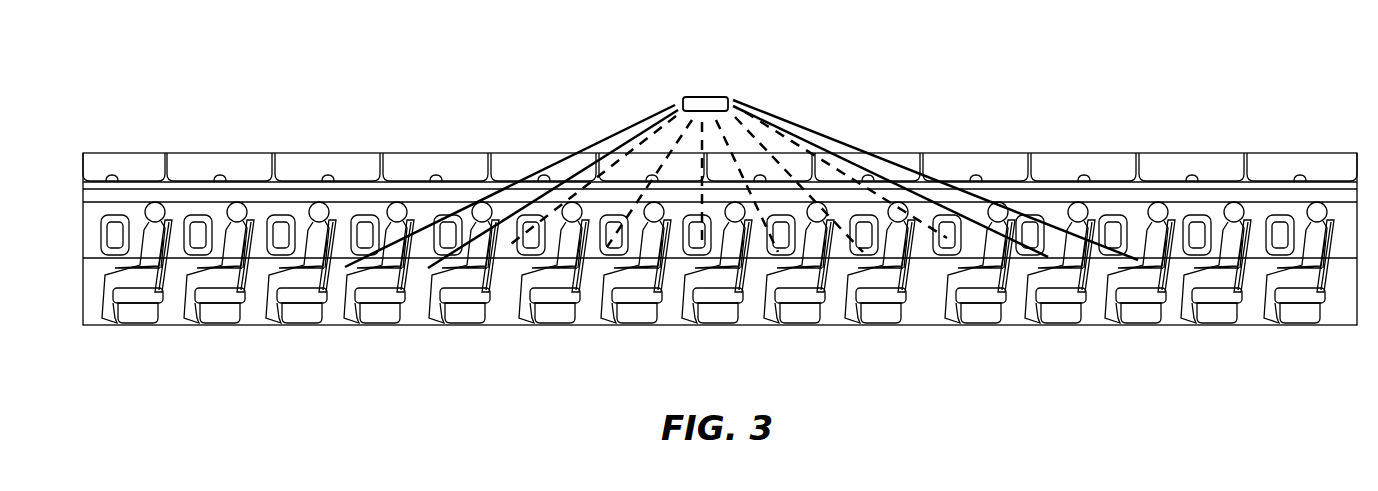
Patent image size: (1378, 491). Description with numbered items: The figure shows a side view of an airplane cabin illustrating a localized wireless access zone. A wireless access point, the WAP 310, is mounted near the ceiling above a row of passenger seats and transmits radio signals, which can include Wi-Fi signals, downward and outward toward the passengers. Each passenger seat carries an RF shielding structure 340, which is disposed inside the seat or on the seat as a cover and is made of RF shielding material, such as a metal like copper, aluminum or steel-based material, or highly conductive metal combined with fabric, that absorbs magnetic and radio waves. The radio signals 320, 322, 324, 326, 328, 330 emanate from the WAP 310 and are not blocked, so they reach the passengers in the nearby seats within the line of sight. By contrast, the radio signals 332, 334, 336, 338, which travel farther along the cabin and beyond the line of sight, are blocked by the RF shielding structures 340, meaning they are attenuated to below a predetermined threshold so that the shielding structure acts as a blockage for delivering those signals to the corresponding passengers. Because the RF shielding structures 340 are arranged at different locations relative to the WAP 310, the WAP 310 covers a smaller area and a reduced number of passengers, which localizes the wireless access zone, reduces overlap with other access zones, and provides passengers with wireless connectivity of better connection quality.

The WAP 310 is at (712, 95).
The radio signal 320 is at (593, 166).
The radio signal 322 is at (663, 153).
The radio signal 324 is at (703, 145).
The radio signal 326 is at (727, 143).
The radio signal 328 is at (765, 150).
The radio signal 330 is at (843, 177).
The radio signal 332 is at (480, 188).
The radio signal 334 is at (532, 196).
The radio signal 336 is at (905, 188).
The radio signal 338 is at (963, 195).
The RF shielding structure 340 is at (718, 286).